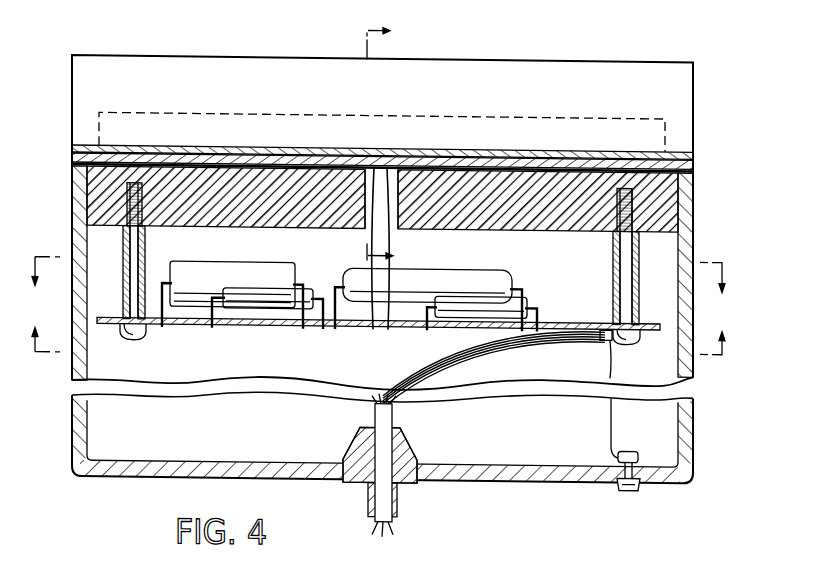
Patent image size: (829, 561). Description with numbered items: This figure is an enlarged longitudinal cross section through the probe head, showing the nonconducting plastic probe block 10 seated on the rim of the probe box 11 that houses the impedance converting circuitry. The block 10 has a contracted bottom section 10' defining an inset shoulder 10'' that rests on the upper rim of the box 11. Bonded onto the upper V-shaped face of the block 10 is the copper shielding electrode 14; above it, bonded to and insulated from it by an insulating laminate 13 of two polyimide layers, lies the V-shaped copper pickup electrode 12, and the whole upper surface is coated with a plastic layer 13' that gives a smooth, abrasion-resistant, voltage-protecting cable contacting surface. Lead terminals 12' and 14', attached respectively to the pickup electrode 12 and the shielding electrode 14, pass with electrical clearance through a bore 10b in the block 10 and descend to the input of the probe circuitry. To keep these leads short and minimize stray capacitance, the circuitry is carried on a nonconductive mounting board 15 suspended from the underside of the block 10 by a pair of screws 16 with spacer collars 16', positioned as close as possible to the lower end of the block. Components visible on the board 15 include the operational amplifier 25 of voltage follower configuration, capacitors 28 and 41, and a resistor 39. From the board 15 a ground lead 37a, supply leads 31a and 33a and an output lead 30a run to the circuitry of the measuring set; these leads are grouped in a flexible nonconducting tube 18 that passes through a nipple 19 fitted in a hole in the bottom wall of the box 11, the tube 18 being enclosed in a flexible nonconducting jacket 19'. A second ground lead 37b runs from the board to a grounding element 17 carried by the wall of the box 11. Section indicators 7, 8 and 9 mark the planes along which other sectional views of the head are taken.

The section line 7- 7 is at (371, 140).
The section line 8- 8 is at (378, 257).
The section line 9- 9 is at (378, 358).
The probe block 10 is at (403, 221).
The contracted bottom section 10' is at (364, 280).
The inset shoulder 10'' is at (363, 272).
The bore 10b is at (365, 226).
The probe box 11 is at (72, 428).
The pickup electrode 12 is at (382, 115).
The lead terminal 12' is at (350, 248).
The insulating laminate 13 is at (408, 158).
The plastic coating layer 13' is at (407, 89).
The shielding electrode 14 is at (411, 199).
The lead terminal 14' is at (407, 249).
The mounting board 15 is at (660, 316).
The screws 16 is at (381, 275).
The spacer collars 16' is at (371, 263).
The grounding element 17 is at (637, 455).
The flexible nonconducting tube 18 is at (374, 413).
The nipple 19 is at (363, 454).
The flexible nonconducting jacket 19' is at (363, 502).
The operational amplifier 25 is at (497, 295).
The capacitor 28 is at (489, 267).
The output lead 30a is at (482, 362).
The negative supply lead 31a is at (473, 395).
The positive supply lead 33a is at (528, 350).
The ground lead 37a is at (433, 361).
The ground lead 37b is at (610, 358).
The resistor 39 is at (280, 285).
The capacitor 41 is at (227, 263).